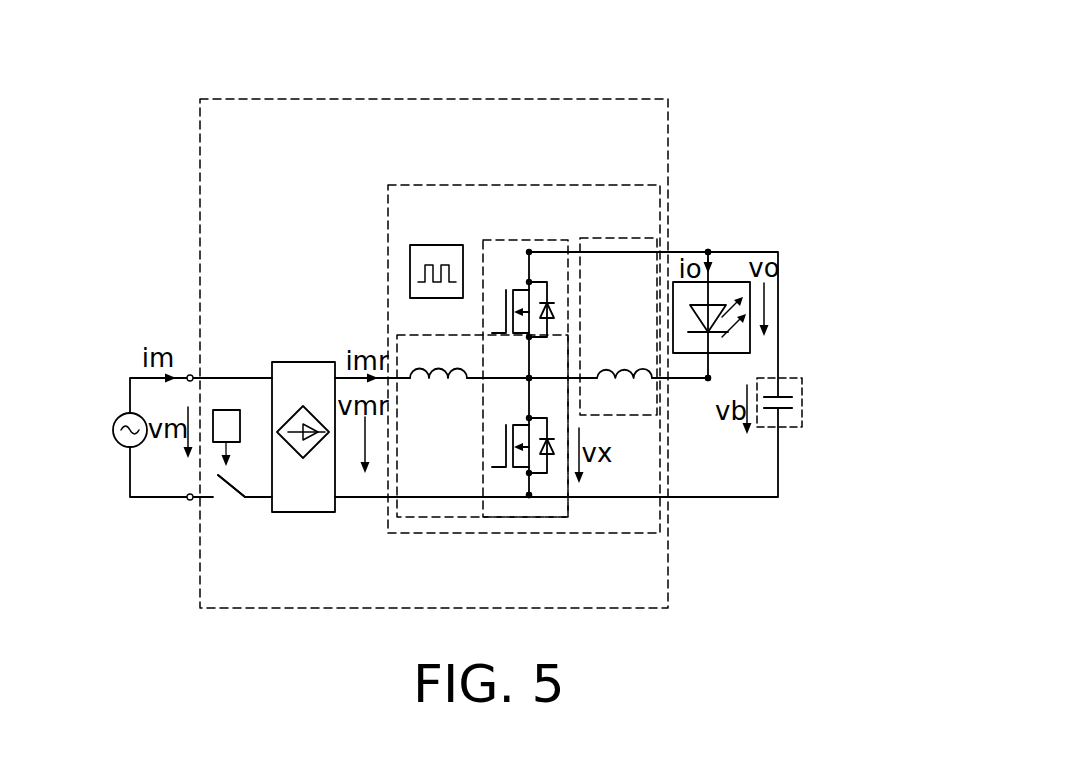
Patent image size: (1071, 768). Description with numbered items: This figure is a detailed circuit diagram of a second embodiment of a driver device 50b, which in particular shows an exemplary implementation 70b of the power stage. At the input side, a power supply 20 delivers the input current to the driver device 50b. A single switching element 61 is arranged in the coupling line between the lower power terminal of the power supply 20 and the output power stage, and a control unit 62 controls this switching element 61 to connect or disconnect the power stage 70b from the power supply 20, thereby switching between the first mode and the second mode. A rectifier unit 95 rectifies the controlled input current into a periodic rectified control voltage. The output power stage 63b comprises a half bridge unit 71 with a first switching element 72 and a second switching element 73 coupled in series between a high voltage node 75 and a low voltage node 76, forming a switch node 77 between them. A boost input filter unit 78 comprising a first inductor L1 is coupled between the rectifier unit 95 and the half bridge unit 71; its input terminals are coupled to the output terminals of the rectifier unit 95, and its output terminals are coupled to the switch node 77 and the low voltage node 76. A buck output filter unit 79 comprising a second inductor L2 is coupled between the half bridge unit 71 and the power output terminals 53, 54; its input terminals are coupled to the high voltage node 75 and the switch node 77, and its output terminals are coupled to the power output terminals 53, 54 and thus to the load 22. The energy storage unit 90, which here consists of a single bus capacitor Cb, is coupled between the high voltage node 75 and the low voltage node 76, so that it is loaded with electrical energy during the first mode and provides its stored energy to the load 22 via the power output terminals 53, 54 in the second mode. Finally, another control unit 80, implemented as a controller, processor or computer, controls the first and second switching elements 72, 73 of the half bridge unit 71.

The power supply 20 is at (114, 426).
The control unit 62 is at (226, 409).
The switching element 61 is at (233, 488).
The rectifier unit 95 is at (302, 361).
The power stage 70b is at (381, 98).
The driver device 50b is at (790, 126).
The output power stage 63b is at (566, 184).
The boost input filter unit 78 is at (393, 340).
The control unit 80 is at (409, 266).
The first inductor L1 is at (438, 392).
The half bridge unit 71 is at (500, 239).
The high voltage node 75 is at (529, 250).
The first switching element 72 is at (508, 268).
The switch node 77 is at (527, 381).
The second switching element 73 is at (507, 485).
The low voltage node 76 is at (530, 498).
The buck output filter unit 79 is at (604, 237).
The second inductor L2 is at (624, 392).
The power output terminal 53 is at (708, 250).
The power output terminal 54 is at (706, 381).
The load 22 is at (741, 281).
The energy storage unit 90 is at (783, 378).
The capacitor Cb is at (800, 408).